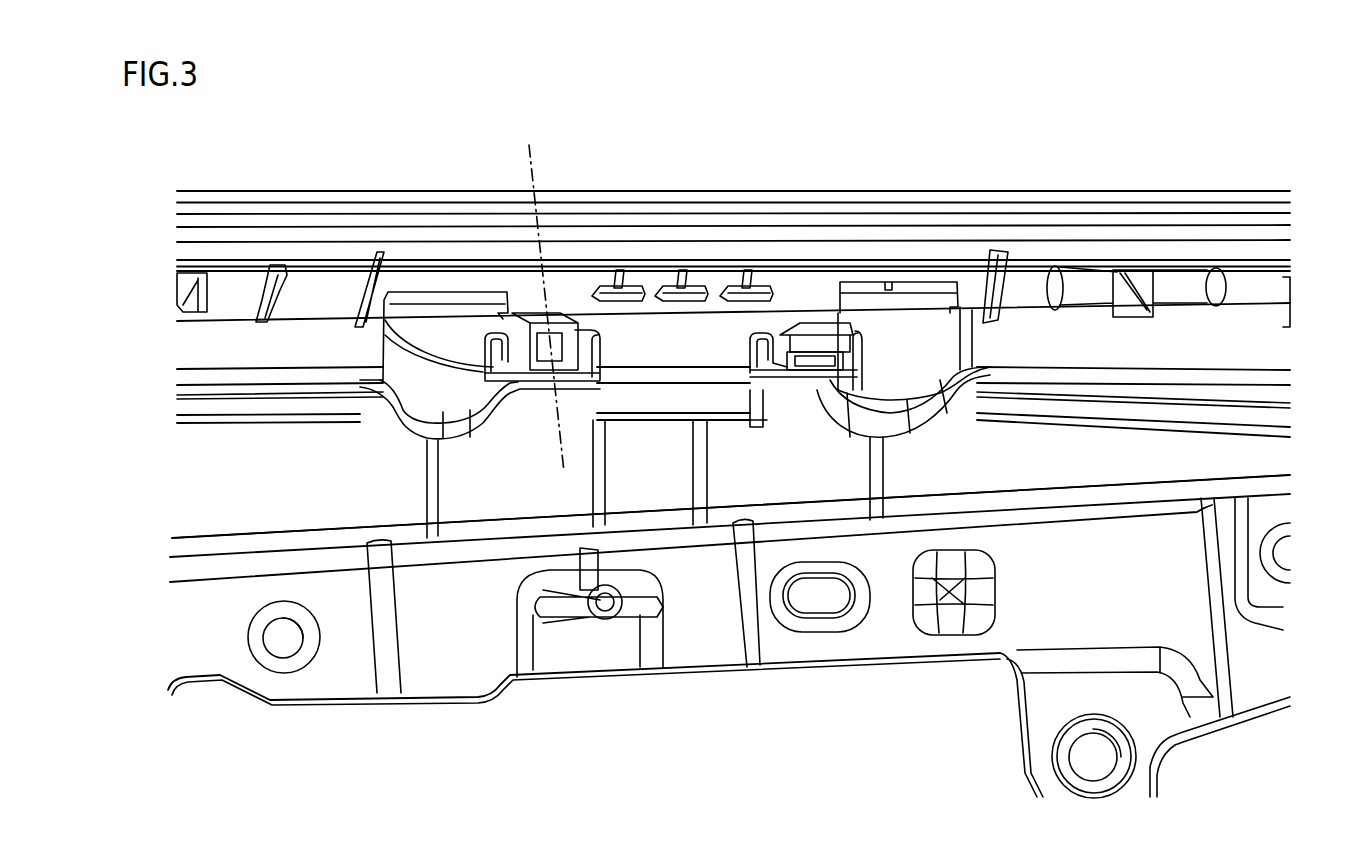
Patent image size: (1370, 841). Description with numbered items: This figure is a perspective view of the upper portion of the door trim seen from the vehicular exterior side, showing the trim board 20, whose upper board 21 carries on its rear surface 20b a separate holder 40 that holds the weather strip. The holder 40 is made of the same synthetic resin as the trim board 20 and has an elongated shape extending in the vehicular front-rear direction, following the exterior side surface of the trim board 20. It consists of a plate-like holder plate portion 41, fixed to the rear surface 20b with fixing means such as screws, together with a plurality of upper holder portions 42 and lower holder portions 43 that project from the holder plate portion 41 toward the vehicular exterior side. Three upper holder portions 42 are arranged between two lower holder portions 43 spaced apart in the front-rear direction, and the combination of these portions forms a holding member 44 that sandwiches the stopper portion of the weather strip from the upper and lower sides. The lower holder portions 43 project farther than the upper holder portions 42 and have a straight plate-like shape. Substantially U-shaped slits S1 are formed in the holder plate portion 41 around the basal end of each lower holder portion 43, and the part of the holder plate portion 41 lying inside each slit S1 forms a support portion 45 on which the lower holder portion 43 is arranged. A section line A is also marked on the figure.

The holder 40 is at (192, 344).
The holder plate portion 41 is at (833, 277).
The upper holder portions 42 is at (620, 270).
The lower holder portions 43 is at (567, 312).
The holding member 44 is at (692, 181).
The support portion 45 is at (500, 353).
The trim board 20 is at (685, 620).
The upper board 21 is at (193, 498).
The rear surface 20b is at (1252, 455).
The slits S1 is at (390, 335).
The section line A is at (546, 312).